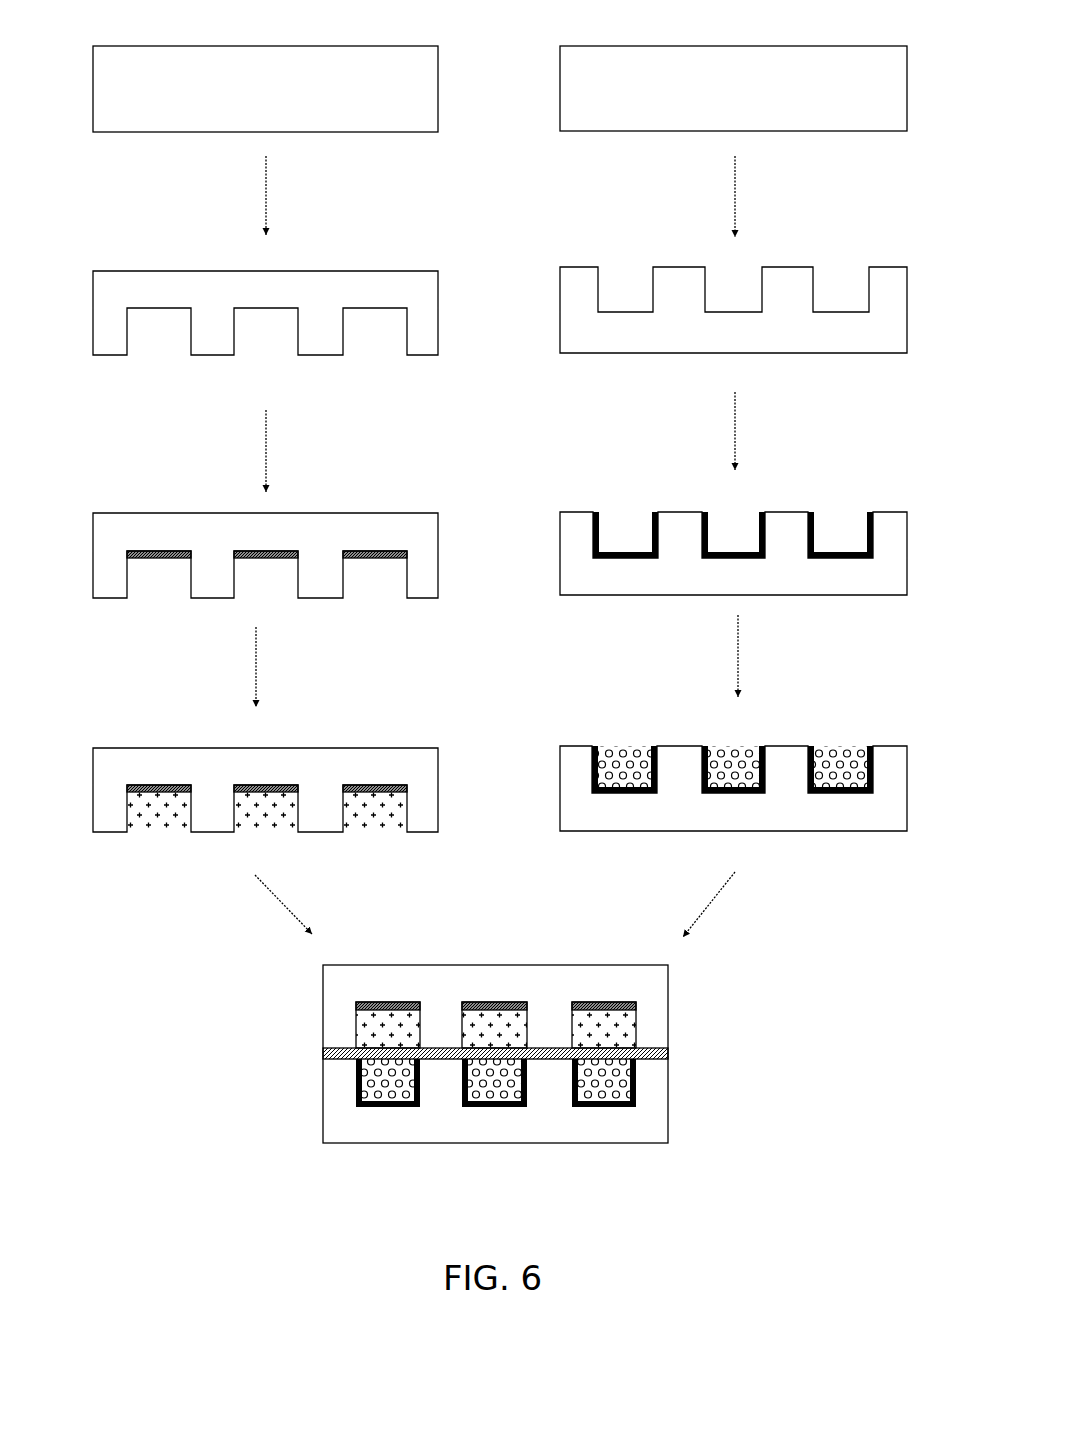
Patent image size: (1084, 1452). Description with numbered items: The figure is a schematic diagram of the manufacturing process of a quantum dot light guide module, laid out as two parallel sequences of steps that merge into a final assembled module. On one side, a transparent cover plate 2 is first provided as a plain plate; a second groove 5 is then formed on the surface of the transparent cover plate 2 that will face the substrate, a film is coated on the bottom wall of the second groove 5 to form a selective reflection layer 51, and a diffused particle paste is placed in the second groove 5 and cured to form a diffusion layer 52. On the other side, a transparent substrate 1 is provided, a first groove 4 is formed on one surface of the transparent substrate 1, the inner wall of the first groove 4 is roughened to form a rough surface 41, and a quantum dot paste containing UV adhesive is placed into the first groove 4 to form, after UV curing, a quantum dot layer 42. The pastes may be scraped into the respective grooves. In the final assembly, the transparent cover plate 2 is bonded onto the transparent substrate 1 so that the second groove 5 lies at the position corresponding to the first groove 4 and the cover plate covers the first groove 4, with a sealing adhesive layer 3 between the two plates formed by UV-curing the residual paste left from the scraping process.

The transparent substrate 1 is at (565, 87).
The transparent cover plate 2 is at (168, 101).
The sealing adhesive layer 3 is at (332, 1058).
The first groove 4 is at (633, 275).
The rough surface 41 is at (598, 537).
The quantum dot layer 42 is at (628, 765).
The second groove 5 is at (147, 332).
The selective reflection layer 51 is at (154, 555).
The diffusion layer 52 is at (153, 812).